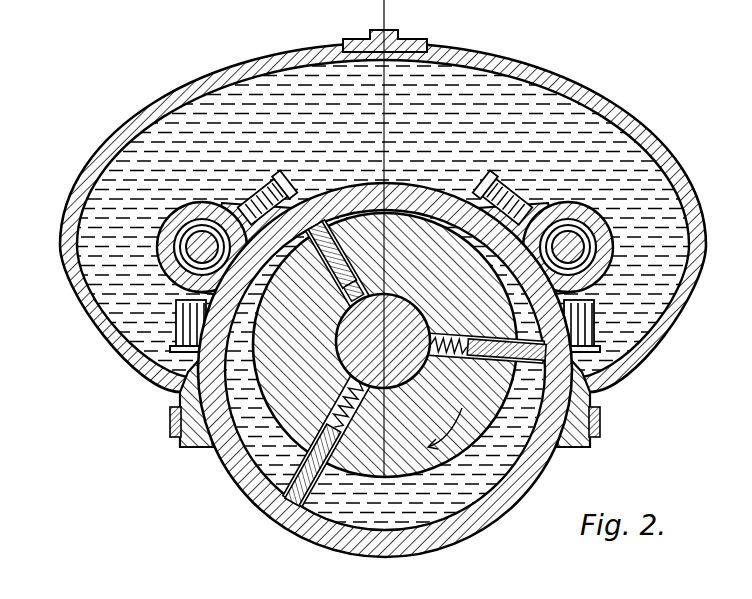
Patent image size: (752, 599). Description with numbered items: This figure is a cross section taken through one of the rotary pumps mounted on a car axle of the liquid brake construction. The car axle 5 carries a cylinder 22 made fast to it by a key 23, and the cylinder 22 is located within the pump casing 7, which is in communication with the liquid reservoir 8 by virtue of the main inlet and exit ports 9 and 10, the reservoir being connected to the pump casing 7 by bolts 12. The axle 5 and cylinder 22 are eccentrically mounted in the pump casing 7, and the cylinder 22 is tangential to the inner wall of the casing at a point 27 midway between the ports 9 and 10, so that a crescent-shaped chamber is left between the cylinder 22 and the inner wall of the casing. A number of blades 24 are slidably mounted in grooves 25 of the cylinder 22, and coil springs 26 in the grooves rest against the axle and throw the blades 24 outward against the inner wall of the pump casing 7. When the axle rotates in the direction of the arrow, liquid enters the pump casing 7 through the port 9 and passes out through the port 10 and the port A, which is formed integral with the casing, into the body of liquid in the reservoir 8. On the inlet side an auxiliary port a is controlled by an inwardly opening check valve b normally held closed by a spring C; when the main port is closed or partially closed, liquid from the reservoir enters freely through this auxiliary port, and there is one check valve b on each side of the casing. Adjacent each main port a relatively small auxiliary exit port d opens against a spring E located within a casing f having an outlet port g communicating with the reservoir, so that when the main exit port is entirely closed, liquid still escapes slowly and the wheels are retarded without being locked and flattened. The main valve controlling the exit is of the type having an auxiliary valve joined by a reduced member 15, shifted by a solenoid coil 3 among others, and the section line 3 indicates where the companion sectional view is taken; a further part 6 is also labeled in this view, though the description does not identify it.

The port A is at (68, 236).
The solenoid coil 3 is at (280, 576).
The car axle 5 is at (230, 470).
The lower casing part 6 is at (573, 420).
The pump casing 7 is at (493, 517).
The liquid reservoir 8 is at (706, 213).
The main inlet port 9 is at (683, 310).
The main exit port 10 is at (88, 308).
The bolt 12 is at (173, 432).
The reduced member 15 is at (569, 240).
The cylinder 22 is at (262, 474).
The key 23 is at (388, 400).
The blade 24 is at (287, 517).
The groove 25 is at (356, 470).
The coil spring 26 is at (272, 498).
The point of tangency 27 is at (396, 183).
The auxiliary port a is at (181, 378).
The check valve b is at (168, 356).
The spring C is at (178, 343).
The auxiliary exit port d is at (292, 190).
The spring E is at (233, 203).
The casing f is at (250, 188).
The outlet port g is at (262, 186).